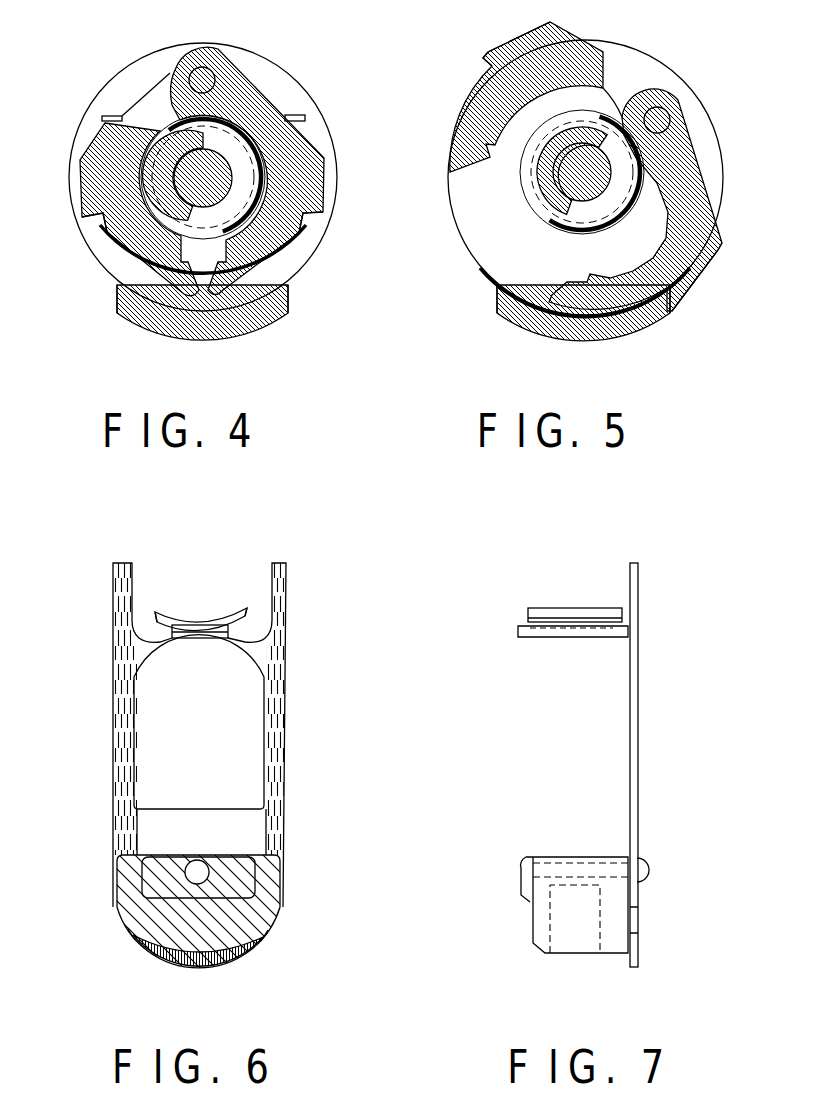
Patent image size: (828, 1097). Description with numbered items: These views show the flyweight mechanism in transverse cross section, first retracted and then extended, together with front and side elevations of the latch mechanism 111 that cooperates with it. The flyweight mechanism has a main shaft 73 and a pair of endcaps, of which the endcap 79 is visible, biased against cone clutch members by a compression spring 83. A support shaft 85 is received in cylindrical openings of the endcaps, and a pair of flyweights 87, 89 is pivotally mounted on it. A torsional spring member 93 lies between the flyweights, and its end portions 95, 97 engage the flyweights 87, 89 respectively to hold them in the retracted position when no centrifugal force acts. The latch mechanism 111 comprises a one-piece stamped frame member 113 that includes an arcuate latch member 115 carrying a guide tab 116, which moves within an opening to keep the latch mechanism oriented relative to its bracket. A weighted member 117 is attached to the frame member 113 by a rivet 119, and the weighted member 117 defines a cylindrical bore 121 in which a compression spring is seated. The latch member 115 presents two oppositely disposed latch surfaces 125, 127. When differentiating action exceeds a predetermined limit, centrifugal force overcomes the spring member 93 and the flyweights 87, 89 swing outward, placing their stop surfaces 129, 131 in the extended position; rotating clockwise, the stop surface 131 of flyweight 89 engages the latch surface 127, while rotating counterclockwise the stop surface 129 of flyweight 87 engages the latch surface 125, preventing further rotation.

In FIG. 4, the main shaft 73 is at (217, 190).
In FIG. 5, the main shaft 73 is at (568, 182).
In FIG. 4, the endcap 79 is at (267, 73).
In FIG. 5, the endcap 79 is at (475, 215).
In FIG. 4, the compression spring 83 is at (173, 203).
In FIG. 5, the compression spring 83 is at (550, 152).
In FIG. 4, the support shaft 85 is at (205, 70).
In FIG. 5, the support shaft 85 is at (668, 112).
In FIG. 4, the flyweight 87 is at (97, 190).
In FIG. 5, the flyweight 87 is at (610, 70).
In FIG. 4, the flyweight 89 is at (313, 193).
In FIG. 5, the flyweight 89 is at (687, 183).
In FIG. 4, the torsional spring member 93 is at (233, 223).
In FIG. 5, the torsional spring member 93 is at (595, 232).
In FIG. 4, the end portion 95 is at (107, 115).
In FIG. 4, the end portion 97 is at (293, 115).
In FIG. 6, the latch mechanism 111 is at (94, 705).
In FIG. 7, the latch mechanism 111 is at (500, 686).
In FIG. 6, the frame member 113 is at (278, 677).
In FIG. 7, the frame member 113 is at (634, 692).
In FIG. 4, the latch member 115 is at (214, 334).
In FIG. 5, the latch member 115 is at (555, 330).
In FIG. 6, the latch member 115 is at (178, 615).
In FIG. 7, the latch member 115 is at (530, 608).
In FIG. 6, the guide tab 116 is at (188, 638).
In FIG. 7, the guide tab 116 is at (518, 630).
In FIG. 6, the weighted member 117 is at (247, 918).
In FIG. 7, the weighted member 117 is at (533, 929).
In FIG. 6, the rivet 119 is at (188, 872).
In FIG. 7, the rivet 119 is at (523, 863).
In FIG. 7, the cylindrical bore 121 is at (550, 917).
In FIG. 4, the latch surface 125 is at (118, 290).
In FIG. 5, the latch surface 125 is at (497, 290).
In FIG. 6, the latch surface 125 is at (157, 608).
In FIG. 4, the latch surface 127 is at (290, 293).
In FIG. 5, the latch surface 127 is at (671, 308).
In FIG. 6, the latch surface 127 is at (247, 607).
In FIG. 7, the latch surface 127 is at (578, 612).
In FIG. 4, the stop surface 129 is at (97, 233).
In FIG. 5, the stop surface 129 is at (490, 58).
In FIG. 4, the stop surface 131 is at (307, 227).
In FIG. 5, the stop surface 131 is at (654, 310).